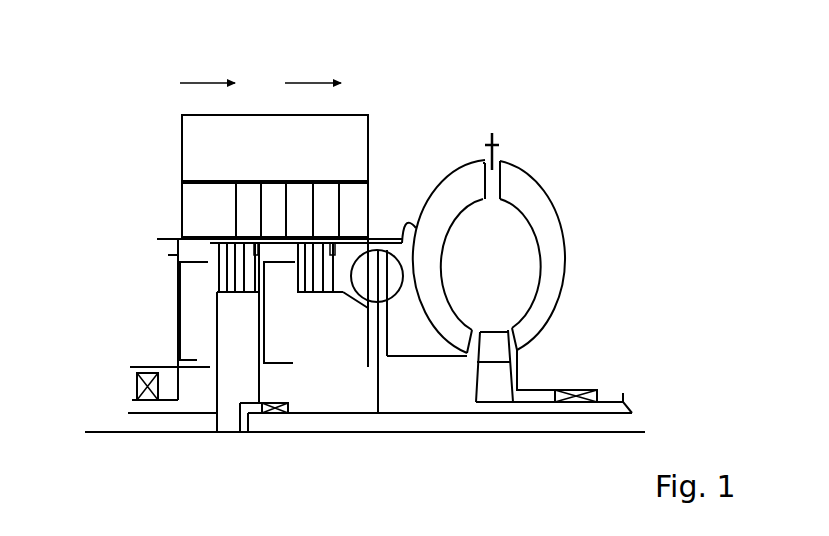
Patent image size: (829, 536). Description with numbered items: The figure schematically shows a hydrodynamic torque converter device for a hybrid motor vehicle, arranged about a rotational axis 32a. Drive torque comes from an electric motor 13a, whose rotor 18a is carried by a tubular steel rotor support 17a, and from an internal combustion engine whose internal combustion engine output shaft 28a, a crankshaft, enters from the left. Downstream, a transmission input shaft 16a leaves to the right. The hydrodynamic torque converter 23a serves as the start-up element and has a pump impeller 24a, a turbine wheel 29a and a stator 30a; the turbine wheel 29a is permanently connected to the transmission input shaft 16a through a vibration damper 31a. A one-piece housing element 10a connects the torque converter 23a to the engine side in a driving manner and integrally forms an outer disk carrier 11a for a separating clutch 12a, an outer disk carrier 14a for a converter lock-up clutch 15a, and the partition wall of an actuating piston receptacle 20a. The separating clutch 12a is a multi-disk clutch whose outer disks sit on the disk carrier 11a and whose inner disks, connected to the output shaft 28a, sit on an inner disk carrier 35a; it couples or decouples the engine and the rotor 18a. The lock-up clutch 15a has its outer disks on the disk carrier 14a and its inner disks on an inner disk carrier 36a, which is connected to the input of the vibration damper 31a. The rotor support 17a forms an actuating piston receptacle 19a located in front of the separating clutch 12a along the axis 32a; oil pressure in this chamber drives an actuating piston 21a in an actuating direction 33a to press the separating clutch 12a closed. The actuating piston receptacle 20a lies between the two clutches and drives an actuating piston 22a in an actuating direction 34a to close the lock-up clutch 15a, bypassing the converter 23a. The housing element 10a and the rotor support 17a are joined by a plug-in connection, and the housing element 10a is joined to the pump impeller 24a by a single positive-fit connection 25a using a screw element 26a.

The housing element 10a is at (420, 190).
The disk carrier 11a is at (220, 240).
The separating clutch 12a is at (197, 389).
The electric motor 13a is at (143, 177).
The disk carrier 14a is at (340, 233).
The converter lock-up clutch 15a is at (350, 359).
The transmission input shaft 16a is at (610, 422).
The rotor support 17a is at (170, 239).
The rotor 18a is at (277, 213).
The actuating piston receptacle 19a is at (260, 357).
The actuating piston receptacle 20a is at (263, 333).
The actuating piston 21a is at (193, 273).
The actuating piston 22a is at (180, 367).
The hydrodynamic torque converter 23a is at (547, 203).
The pump impeller 24a is at (543, 213).
The positive-fit connection 25a is at (467, 188).
The screw element 26a is at (540, 158).
The internal combustion engine output shaft 28a is at (135, 417).
The turbine wheel 29a is at (492, 122).
The stator 30a is at (487, 345).
The vibration damper 31a is at (403, 319).
The rotational axis 32a is at (107, 432).
The actuating direction 33a is at (205, 83).
The actuating direction 34a is at (313, 83).
The disk carrier 35a is at (217, 298).
The disk carrier 36a is at (327, 293).